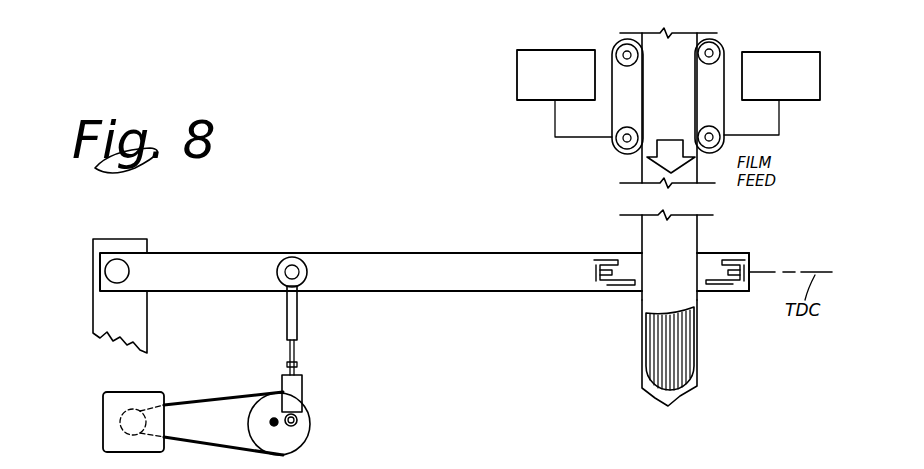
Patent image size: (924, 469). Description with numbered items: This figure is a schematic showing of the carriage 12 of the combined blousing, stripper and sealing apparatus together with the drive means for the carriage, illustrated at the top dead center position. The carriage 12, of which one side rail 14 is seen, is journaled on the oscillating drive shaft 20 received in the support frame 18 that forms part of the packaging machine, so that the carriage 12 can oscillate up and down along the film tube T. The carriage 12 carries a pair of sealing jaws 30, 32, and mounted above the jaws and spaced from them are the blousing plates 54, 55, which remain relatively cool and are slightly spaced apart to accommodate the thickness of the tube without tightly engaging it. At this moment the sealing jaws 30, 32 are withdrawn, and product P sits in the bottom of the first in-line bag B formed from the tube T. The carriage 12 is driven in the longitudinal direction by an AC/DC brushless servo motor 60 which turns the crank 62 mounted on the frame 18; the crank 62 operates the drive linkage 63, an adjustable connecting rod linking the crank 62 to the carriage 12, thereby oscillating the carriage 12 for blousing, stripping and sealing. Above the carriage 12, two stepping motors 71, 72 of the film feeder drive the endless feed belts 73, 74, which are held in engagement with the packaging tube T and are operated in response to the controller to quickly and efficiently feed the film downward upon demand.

The carriage 12 is at (468, 294).
The side rail 14 is at (328, 262).
The support frame 18 is at (107, 323).
The oscillating drive shaft 20 is at (110, 270).
The sealing jaw 30 is at (750, 268).
The sealing jaw 32 is at (594, 275).
The blousing plate 54 is at (735, 262).
The blousing plate 55 is at (607, 260).
The servo motor 60 is at (113, 437).
The crank 62 is at (280, 442).
The drive linkage 63 is at (293, 313).
The stepping motor 71 is at (812, 54).
The stepping motor 72 is at (519, 57).
The feed belt 73 is at (725, 62).
The feed belt 74 is at (610, 68).
The product P is at (677, 348).
The bag B is at (642, 362).
The film tube T is at (680, 238).